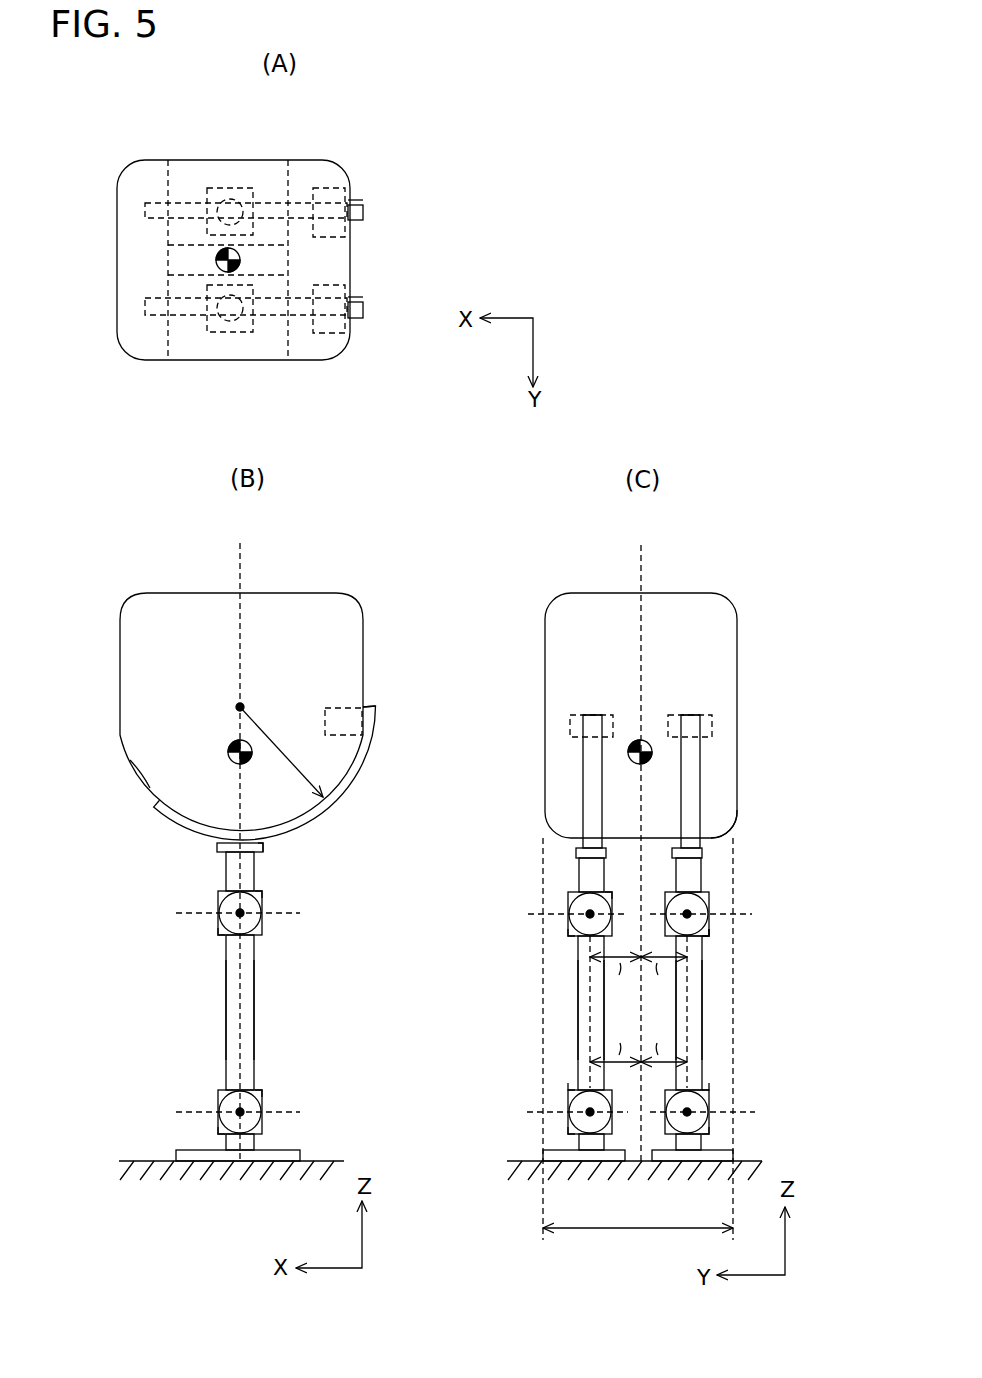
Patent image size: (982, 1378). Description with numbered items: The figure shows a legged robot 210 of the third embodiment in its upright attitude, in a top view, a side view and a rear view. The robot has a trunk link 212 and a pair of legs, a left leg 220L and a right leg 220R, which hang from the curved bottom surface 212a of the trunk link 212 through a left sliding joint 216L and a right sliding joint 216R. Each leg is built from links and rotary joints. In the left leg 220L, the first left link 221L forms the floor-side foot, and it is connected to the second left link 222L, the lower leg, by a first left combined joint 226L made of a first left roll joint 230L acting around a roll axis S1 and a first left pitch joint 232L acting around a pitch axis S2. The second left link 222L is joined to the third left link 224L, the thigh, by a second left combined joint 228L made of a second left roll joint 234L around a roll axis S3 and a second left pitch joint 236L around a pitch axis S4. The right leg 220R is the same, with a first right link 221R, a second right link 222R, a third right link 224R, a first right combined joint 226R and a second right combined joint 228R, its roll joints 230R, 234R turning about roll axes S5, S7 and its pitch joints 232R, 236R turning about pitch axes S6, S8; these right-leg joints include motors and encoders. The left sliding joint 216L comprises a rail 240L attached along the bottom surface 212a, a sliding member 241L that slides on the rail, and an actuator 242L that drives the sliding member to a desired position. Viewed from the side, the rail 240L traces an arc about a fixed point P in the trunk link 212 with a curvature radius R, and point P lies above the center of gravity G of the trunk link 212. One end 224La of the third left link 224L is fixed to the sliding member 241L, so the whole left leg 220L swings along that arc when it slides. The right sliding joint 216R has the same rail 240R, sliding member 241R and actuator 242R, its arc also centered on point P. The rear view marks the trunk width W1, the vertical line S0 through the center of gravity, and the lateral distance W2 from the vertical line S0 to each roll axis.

The legged robot 210 is at (350, 120).
The trunk link 212 is at (133, 230).
The bottom surface 212a is at (148, 790).
The left sliding joint 216L is at (360, 293).
The right sliding joint 216R is at (358, 198).
The left leg 220L is at (222, 335).
The right leg 220R is at (233, 187).
The first left link 221L is at (298, 1151).
The first right link 221R is at (733, 1155).
The second left link 222L is at (254, 997).
The second right link 222R is at (702, 977).
The third left link 224L is at (254, 872).
The third right link 224R is at (702, 868).
The one end of the third left link 224La is at (265, 852).
The first left combined joint 226L is at (263, 1094).
The first right combined joint 226R is at (705, 1085).
The second left combined joint 228L is at (264, 895).
The second right combined joint 228R is at (707, 938).
The first left roll joint 230L is at (218, 1088).
The first right roll joint 230R is at (708, 1093).
The first left pitch joint 232L is at (218, 1122).
The first right pitch joint 232R is at (708, 1128).
The second left roll joint 234L is at (218, 893).
The second right roll joint 234R is at (708, 895).
The second left pitch joint 236L is at (218, 934).
The second right pitch joint 236R is at (708, 930).
The rail 240L is at (363, 312).
The rail 240R is at (363, 212).
The sliding member 241L is at (218, 848).
The sliding member 241R is at (702, 855).
The actuator 242L is at (333, 337).
The actuator 242R is at (333, 238).
The center of gravity G is at (216, 260).
The point P is at (236, 707).
The curvature radius R is at (281, 752).
The vertical line S0 is at (444, 838).
The roll axis S1 is at (589, 1112).
The pitch axis S2 is at (240, 1112).
The roll axis S3 is at (589, 913).
The pitch axis S4 is at (240, 913).
The roll axis S5 is at (687, 1112).
The pitch axis S6 is at (716, 1114).
The roll axis S7 is at (687, 913).
The pitch axis S8 is at (716, 915).
The width of the trunk link W1 is at (638, 1039).
The distance W2 is at (638, 1012).